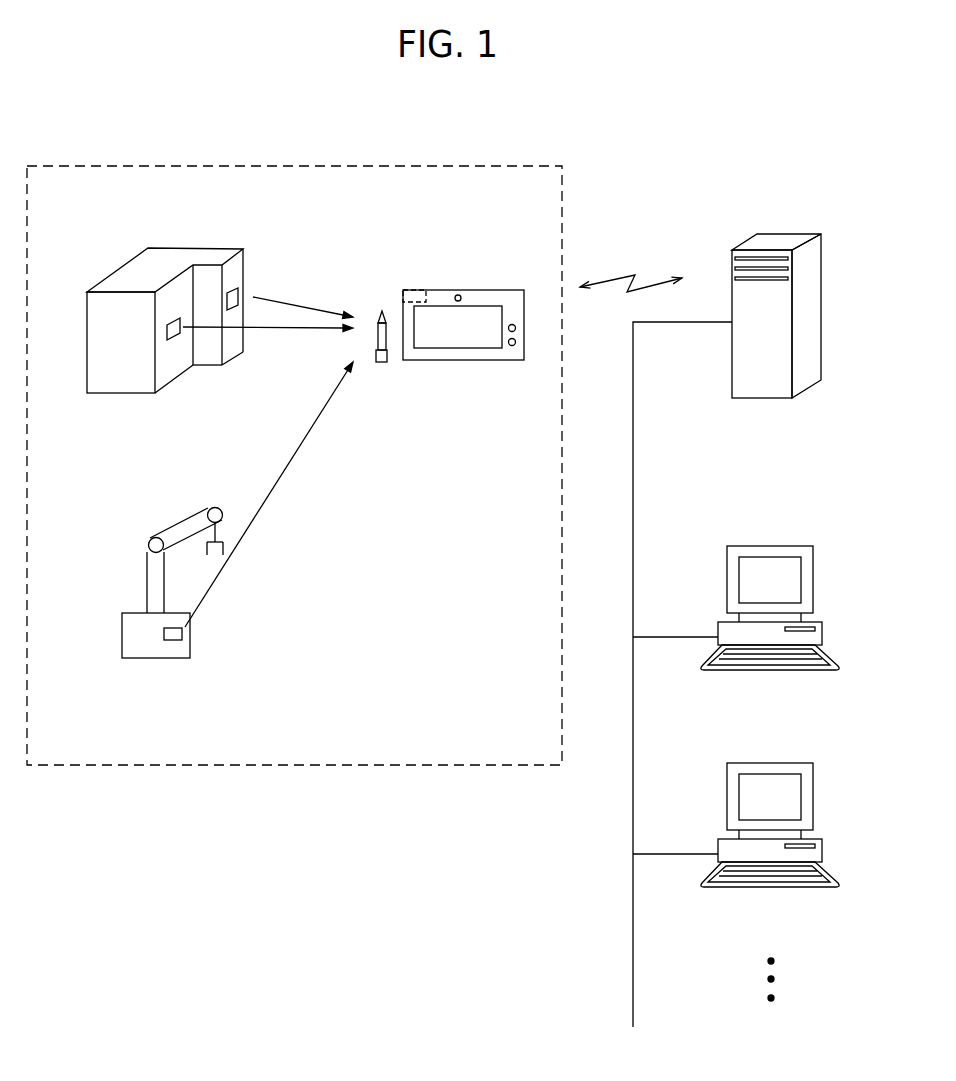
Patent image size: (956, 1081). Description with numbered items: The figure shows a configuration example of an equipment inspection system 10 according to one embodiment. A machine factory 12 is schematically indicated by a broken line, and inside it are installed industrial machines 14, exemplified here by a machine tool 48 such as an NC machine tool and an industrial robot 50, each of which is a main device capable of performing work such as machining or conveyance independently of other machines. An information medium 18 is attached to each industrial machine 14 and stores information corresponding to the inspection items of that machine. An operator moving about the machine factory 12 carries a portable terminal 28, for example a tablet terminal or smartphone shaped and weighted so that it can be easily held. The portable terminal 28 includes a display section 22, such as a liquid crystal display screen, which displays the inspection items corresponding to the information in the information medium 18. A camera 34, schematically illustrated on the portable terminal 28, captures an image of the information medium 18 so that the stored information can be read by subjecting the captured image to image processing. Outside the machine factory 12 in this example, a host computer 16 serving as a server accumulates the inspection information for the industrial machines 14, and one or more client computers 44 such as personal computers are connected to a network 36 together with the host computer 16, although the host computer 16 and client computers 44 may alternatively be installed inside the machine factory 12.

The equipment inspection system 10 is at (305, 782).
The machine factory 12 is at (463, 767).
The industrial machine 14 is at (146, 502).
The machine tool 48 is at (121, 408).
The industrial robot 50 is at (138, 668).
The host computer 16 is at (805, 234).
The information medium 18 is at (234, 290).
The display section 22 is at (490, 348).
The portable terminal 28 is at (450, 336).
The camera 34 is at (413, 289).
The network 36 is at (633, 463).
The client computer 44 is at (805, 545).